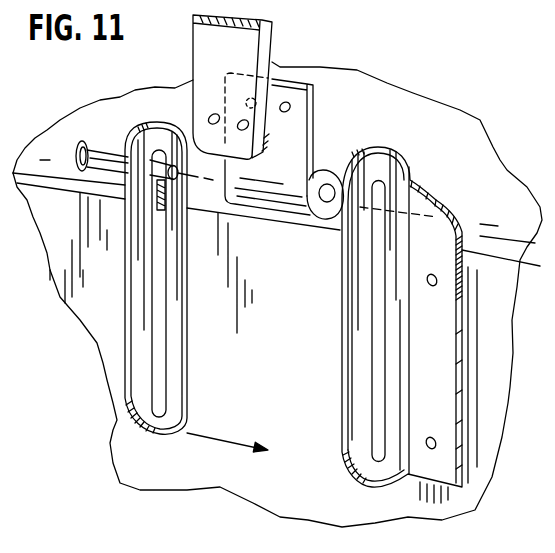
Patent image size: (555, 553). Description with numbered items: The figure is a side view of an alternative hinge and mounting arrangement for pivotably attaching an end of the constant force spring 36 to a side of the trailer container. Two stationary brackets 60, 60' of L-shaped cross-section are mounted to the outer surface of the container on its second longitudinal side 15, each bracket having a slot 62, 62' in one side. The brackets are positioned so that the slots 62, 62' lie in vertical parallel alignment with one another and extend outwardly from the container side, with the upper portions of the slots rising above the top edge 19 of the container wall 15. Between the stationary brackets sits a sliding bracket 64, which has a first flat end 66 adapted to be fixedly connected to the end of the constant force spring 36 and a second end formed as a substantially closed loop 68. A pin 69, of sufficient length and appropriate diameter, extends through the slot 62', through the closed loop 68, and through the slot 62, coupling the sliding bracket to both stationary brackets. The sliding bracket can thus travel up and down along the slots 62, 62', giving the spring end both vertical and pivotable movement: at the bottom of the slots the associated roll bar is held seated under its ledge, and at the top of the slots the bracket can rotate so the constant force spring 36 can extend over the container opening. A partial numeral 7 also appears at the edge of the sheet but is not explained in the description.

The second longitudinal side 15 is at (268, 347).
The top edge 19 is at (508, 252).
The constant force spring 36 is at (229, 58).
The sliding bracket 64 is at (297, 160).
The first flat end 66 is at (282, 90).
The substantially closed loop 68 is at (292, 207).
The pin 69 is at (103, 153).
The stationary bracket 60' is at (127, 309).
The slot 62' is at (119, 283).
The stationary bracket 60 is at (370, 326).
The slot 62 is at (335, 321).
The partial numeral 7 is at (550, 409).